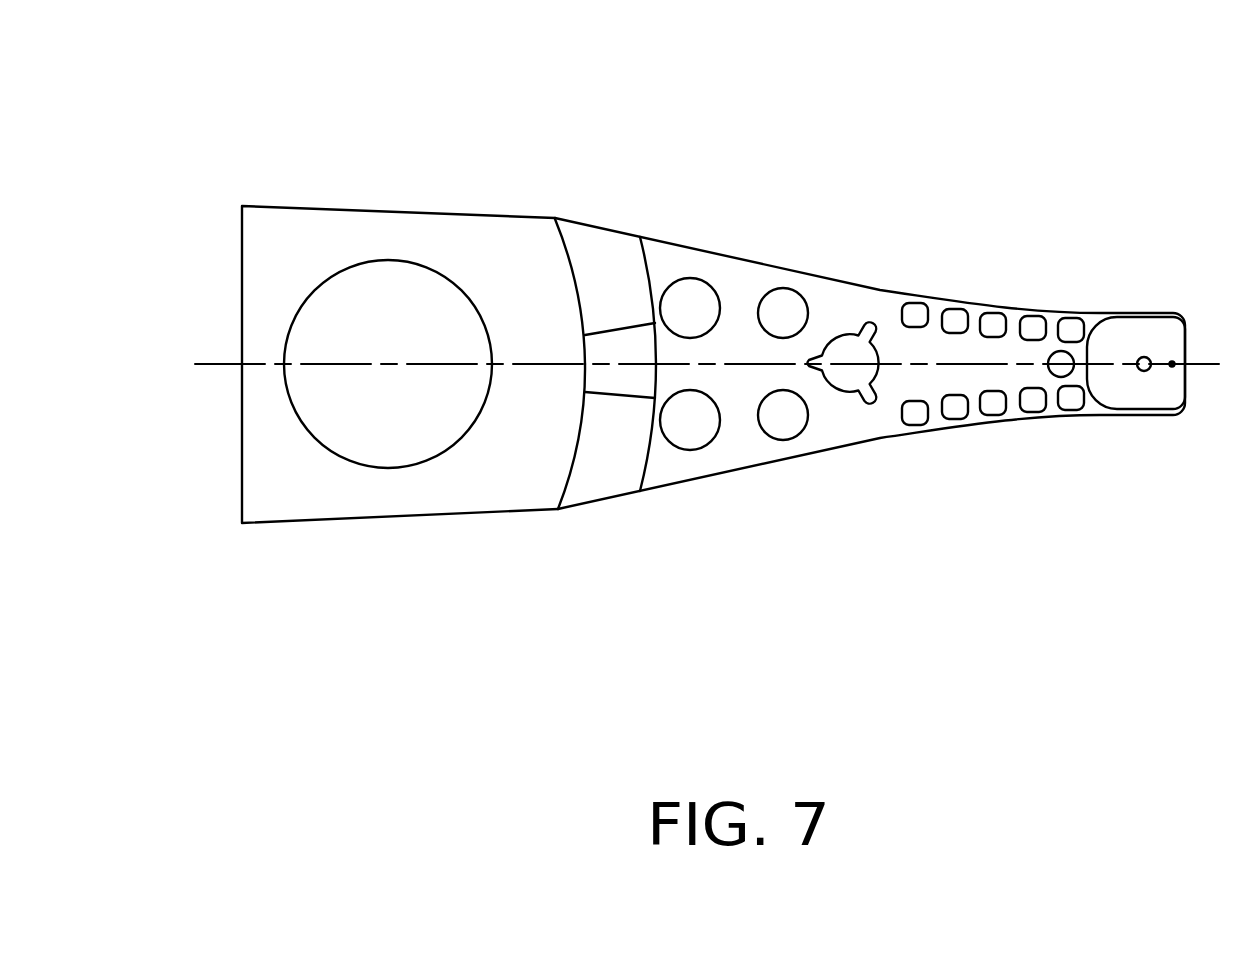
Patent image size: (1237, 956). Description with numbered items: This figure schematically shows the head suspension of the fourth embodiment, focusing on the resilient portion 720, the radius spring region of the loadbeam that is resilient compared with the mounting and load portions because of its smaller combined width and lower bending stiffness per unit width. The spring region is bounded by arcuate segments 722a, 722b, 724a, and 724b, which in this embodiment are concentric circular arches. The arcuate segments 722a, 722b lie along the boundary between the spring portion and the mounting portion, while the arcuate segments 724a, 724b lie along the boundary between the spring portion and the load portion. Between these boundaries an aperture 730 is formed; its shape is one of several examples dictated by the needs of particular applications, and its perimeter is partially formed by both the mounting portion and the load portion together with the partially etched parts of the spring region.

The resilient portion 720 is at (636, 179).
The arcuate segment 722a is at (575, 457).
The arcuate segment 722b is at (566, 253).
The arcuate segment 724a is at (647, 457).
The arcuate segment 724b is at (647, 263).
The aperture 730 is at (635, 345).